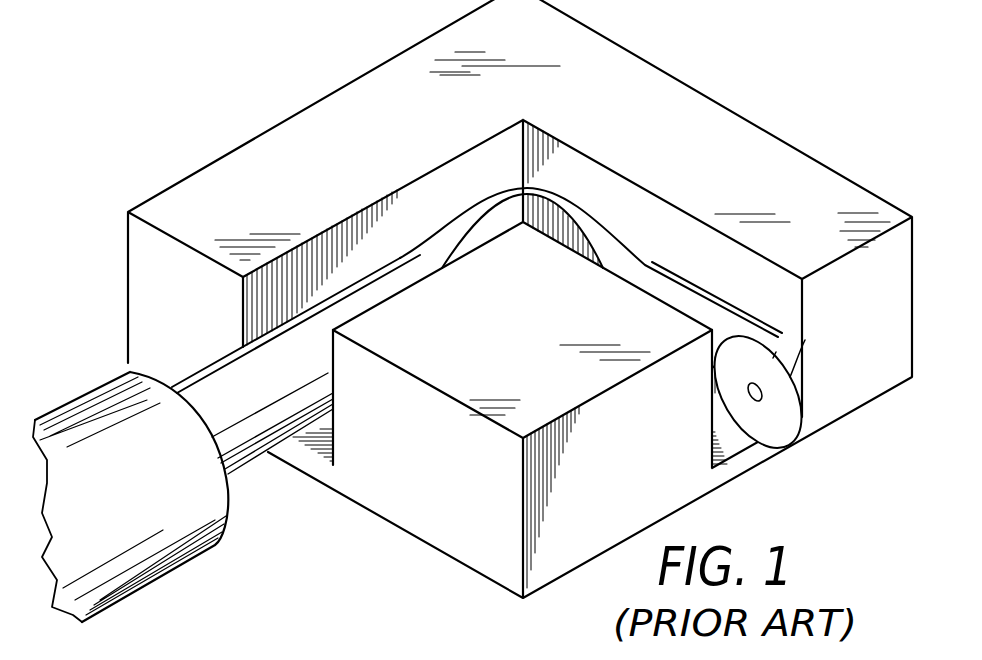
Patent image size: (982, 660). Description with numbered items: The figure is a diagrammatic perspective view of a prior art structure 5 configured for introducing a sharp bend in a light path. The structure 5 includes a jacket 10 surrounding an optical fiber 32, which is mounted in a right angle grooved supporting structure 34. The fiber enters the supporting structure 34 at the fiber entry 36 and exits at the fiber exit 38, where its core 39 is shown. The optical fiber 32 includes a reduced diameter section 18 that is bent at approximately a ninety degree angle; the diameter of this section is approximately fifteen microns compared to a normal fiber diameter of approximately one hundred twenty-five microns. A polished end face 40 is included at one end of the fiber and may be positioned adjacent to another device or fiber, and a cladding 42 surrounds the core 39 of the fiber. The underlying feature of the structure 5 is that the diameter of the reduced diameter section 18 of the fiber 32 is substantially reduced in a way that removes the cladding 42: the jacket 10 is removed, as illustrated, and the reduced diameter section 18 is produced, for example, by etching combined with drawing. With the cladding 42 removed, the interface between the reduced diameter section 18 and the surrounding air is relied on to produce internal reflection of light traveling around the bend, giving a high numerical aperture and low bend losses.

The structure 5 is at (745, 80).
The jacket 10 is at (163, 547).
The reduced diameter section 18 is at (497, 192).
The optical fiber 32 is at (250, 437).
The right angle grooved supporting structure 34 is at (208, 203).
The fiber entry 36 is at (318, 452).
The fiber exit 38 is at (765, 438).
The core 39 is at (773, 394).
The polished end face 40 is at (790, 377).
The cladding 42 is at (773, 358).